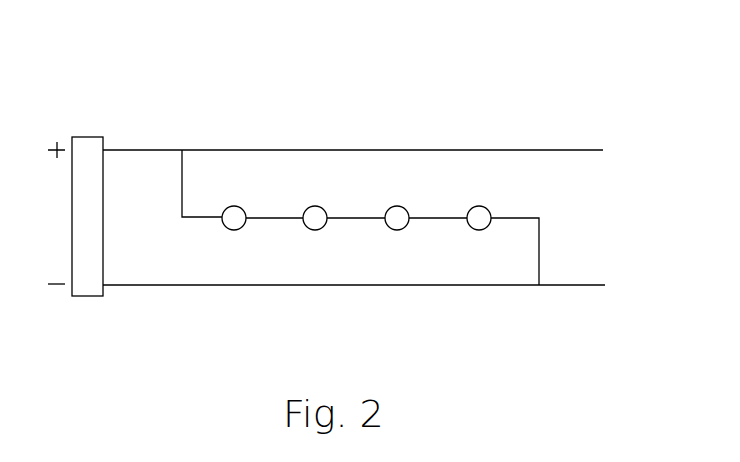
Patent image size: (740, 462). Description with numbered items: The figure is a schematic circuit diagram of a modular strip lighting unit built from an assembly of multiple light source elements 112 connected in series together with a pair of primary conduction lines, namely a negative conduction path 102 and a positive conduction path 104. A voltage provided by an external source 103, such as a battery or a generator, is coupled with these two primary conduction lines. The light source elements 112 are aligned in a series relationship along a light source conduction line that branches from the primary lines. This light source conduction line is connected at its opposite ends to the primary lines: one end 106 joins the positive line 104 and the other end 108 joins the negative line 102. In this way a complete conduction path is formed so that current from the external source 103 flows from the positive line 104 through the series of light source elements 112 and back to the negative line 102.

The negative conduction path 102 is at (176, 286).
The external source 103 is at (86, 150).
The positive conduction path 104 is at (542, 150).
The end of light source conduction line 106 is at (183, 150).
The end of light source conduction line 108 is at (540, 287).
The light source elements 112 is at (232, 207).